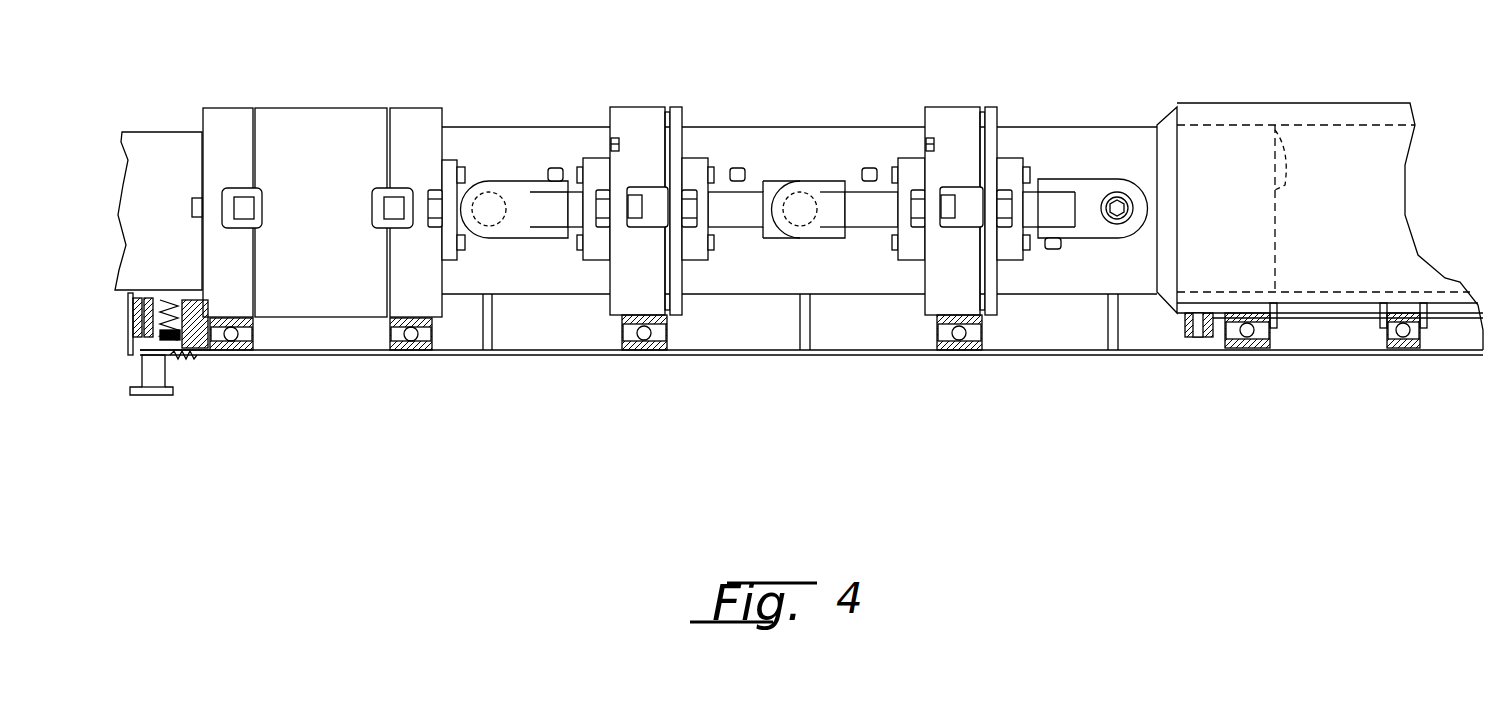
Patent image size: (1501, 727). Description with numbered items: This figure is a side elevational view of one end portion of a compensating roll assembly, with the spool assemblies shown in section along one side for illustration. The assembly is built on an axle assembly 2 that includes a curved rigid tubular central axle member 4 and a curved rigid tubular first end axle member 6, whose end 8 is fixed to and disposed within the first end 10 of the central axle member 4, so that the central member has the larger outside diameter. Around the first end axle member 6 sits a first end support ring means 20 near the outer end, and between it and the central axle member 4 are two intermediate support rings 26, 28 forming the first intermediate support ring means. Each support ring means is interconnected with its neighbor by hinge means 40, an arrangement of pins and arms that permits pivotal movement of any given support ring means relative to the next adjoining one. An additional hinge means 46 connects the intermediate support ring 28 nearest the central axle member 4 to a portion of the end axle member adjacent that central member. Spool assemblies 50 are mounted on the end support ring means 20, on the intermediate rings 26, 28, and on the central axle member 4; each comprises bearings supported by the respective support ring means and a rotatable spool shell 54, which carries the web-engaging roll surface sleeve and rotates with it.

The axle assembly 2 is at (898, 42).
The central axle member 4 is at (1330, 212).
The first end axle member 6 is at (723, 126).
The end of first end axle member 8 is at (1280, 125).
The first end of central axle member 10 is at (1168, 118).
The first end support ring means 20 is at (316, 108).
The intermediate support ring 26 is at (660, 82).
The intermediate support ring 28 is at (965, 82).
The hinge means 40 is at (842, 153).
The additional hinge means 46 is at (1058, 178).
The spool assemblies 50 is at (360, 355).
The spool shells 54 is at (327, 355).